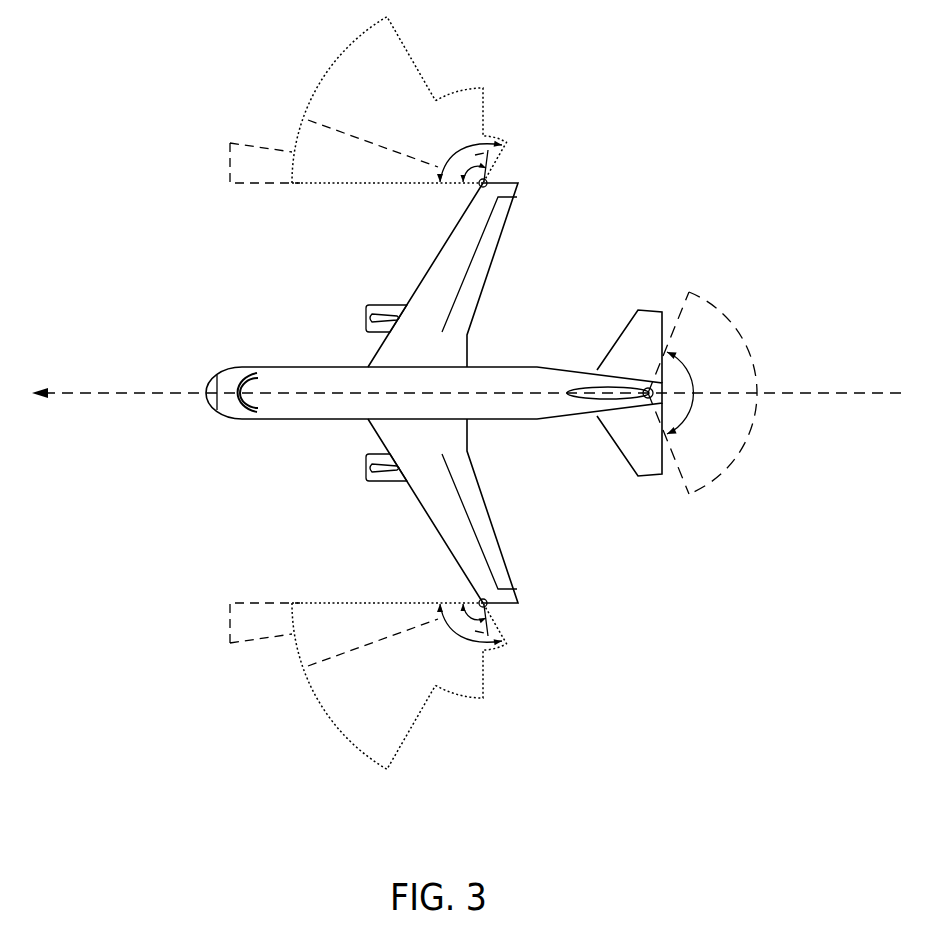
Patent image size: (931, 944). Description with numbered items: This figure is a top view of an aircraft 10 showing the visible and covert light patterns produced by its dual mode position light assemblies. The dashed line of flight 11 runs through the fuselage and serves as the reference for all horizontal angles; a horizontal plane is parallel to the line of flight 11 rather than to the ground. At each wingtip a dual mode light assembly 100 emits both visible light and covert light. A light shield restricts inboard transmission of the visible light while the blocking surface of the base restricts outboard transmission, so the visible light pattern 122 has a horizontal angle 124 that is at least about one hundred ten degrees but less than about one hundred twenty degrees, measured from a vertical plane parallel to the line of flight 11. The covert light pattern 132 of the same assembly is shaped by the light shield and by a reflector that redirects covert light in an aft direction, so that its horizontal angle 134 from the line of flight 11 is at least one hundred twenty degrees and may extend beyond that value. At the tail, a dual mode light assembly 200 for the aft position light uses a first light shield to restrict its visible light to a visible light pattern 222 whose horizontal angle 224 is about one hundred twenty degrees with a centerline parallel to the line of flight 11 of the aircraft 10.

The aircraft 10 is at (256, 320).
The line of flight 11 is at (110, 393).
The dual mode light assembly 100 is at (487, 184).
The visible light pattern 122 is at (260, 148).
The horizontal angle 124 is at (460, 176).
The covert light pattern 132 is at (332, 63).
The horizontal angle 134 is at (479, 147).
The dual mode light assembly 200 is at (663, 427).
The visible light pattern 222 is at (728, 467).
The horizontal angle 224 is at (668, 353).